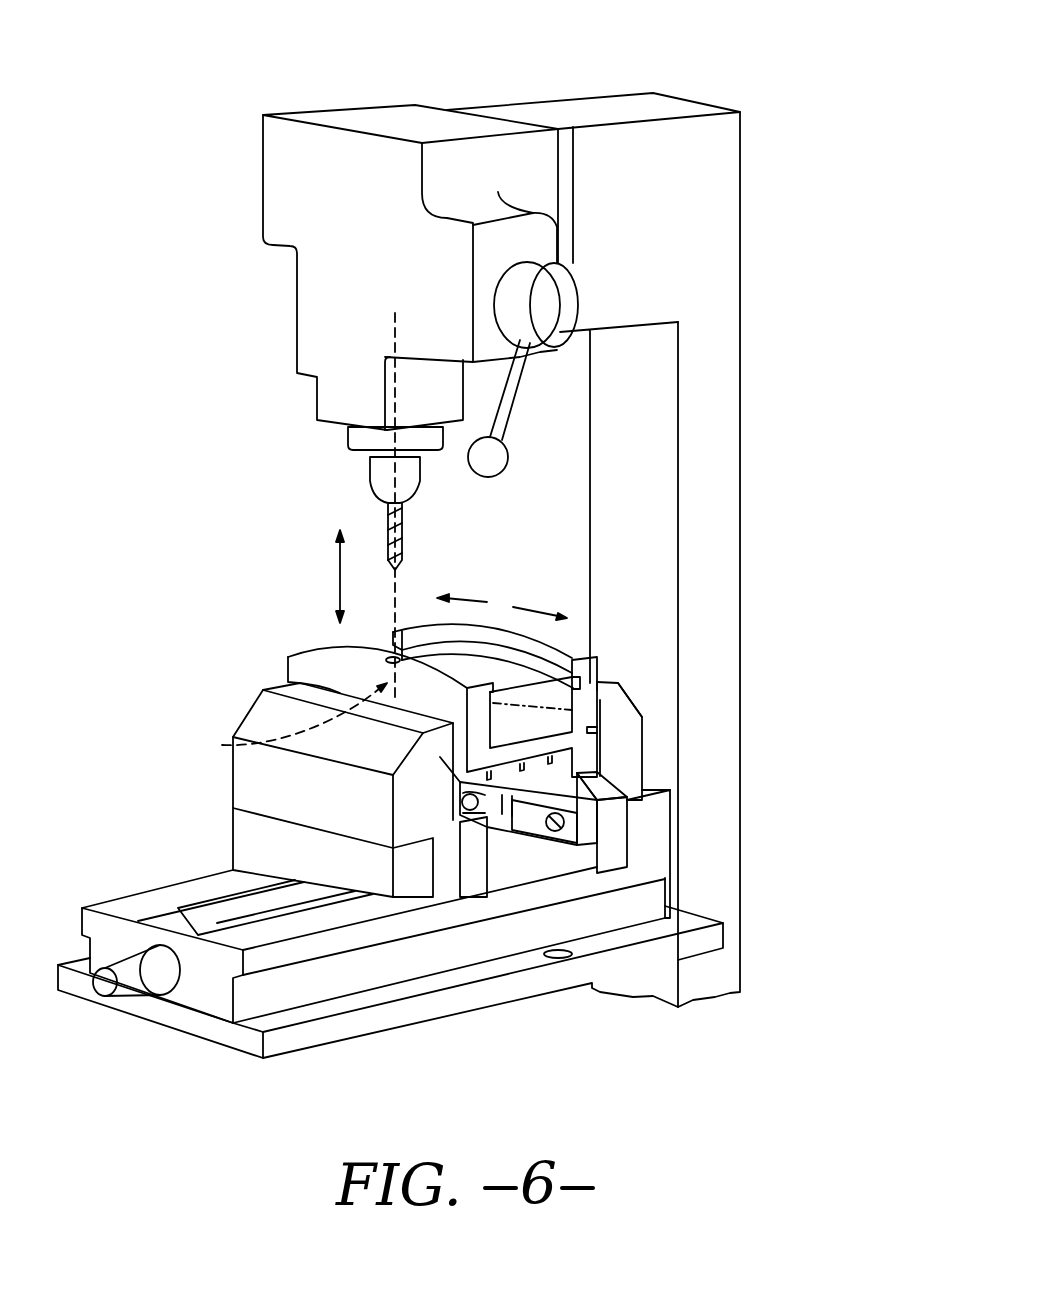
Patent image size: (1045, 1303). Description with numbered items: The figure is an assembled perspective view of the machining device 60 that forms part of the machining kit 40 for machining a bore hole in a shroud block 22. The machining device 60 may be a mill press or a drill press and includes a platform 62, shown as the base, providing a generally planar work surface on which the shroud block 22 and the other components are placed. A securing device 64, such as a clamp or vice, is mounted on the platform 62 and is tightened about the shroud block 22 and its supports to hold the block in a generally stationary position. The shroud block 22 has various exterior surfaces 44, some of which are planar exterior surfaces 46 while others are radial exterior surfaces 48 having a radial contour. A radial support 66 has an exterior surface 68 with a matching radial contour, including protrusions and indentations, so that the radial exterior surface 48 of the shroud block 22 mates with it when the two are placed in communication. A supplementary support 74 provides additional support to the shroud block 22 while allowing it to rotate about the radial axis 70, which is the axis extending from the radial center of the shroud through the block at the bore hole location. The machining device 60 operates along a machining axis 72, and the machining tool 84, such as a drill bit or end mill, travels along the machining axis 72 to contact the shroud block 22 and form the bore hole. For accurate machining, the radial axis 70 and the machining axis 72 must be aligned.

The machining device 60 is at (725, 75).
The machining kit 40 is at (160, 172).
The machining tool 84 is at (388, 523).
The machining axis 72 is at (397, 593).
The exterior surfaces 44 is at (567, 642).
The planar exterior surfaces 46 is at (308, 670).
The radial exterior surfaces 48 is at (572, 652).
The securing device 64 is at (247, 776).
The radial axis 70 is at (235, 745).
The shroud block 22 is at (637, 675).
The exterior surface 68 is at (603, 781).
The radial support 66 is at (625, 843).
The supplementary support 74 is at (478, 882).
The platform 62 is at (523, 867).